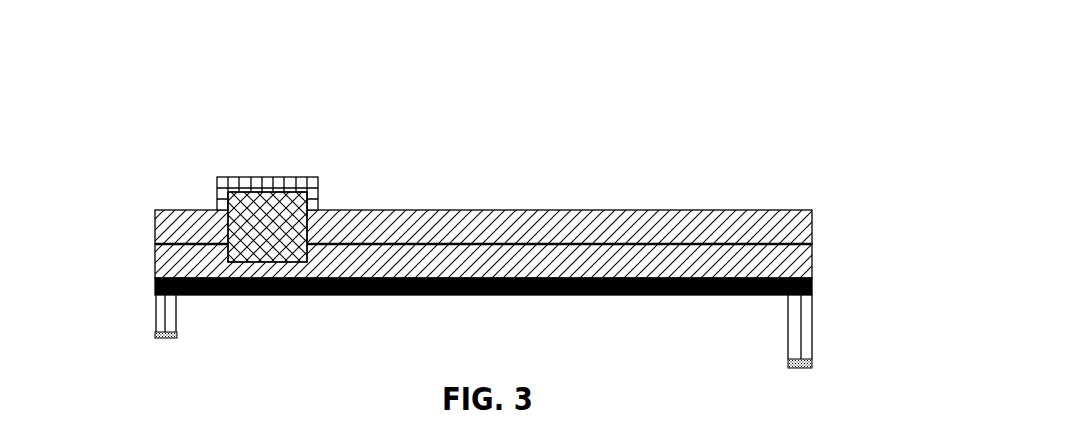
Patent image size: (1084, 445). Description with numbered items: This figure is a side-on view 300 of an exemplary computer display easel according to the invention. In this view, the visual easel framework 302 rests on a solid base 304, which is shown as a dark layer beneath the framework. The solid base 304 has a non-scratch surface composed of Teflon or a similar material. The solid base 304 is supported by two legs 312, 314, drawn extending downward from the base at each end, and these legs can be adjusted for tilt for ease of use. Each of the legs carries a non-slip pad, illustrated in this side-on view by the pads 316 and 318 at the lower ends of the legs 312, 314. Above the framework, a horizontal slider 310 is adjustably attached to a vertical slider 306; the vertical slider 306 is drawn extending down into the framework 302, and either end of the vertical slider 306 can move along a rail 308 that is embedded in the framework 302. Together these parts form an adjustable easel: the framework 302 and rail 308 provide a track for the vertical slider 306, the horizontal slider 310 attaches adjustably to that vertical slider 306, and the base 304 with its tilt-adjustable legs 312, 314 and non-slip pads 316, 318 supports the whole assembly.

The side-on view 300 is at (600, 133).
The visual easel framework 302 is at (728, 210).
The solid base 304 is at (813, 287).
The vertical slider 306 is at (307, 225).
The rail 308 is at (760, 243).
The horizontal slider 310 is at (217, 177).
The leg 312 is at (810, 330).
The leg 314 is at (157, 313).
The non-slip pad 316 is at (157, 333).
The non-slip pad 318 is at (788, 363).